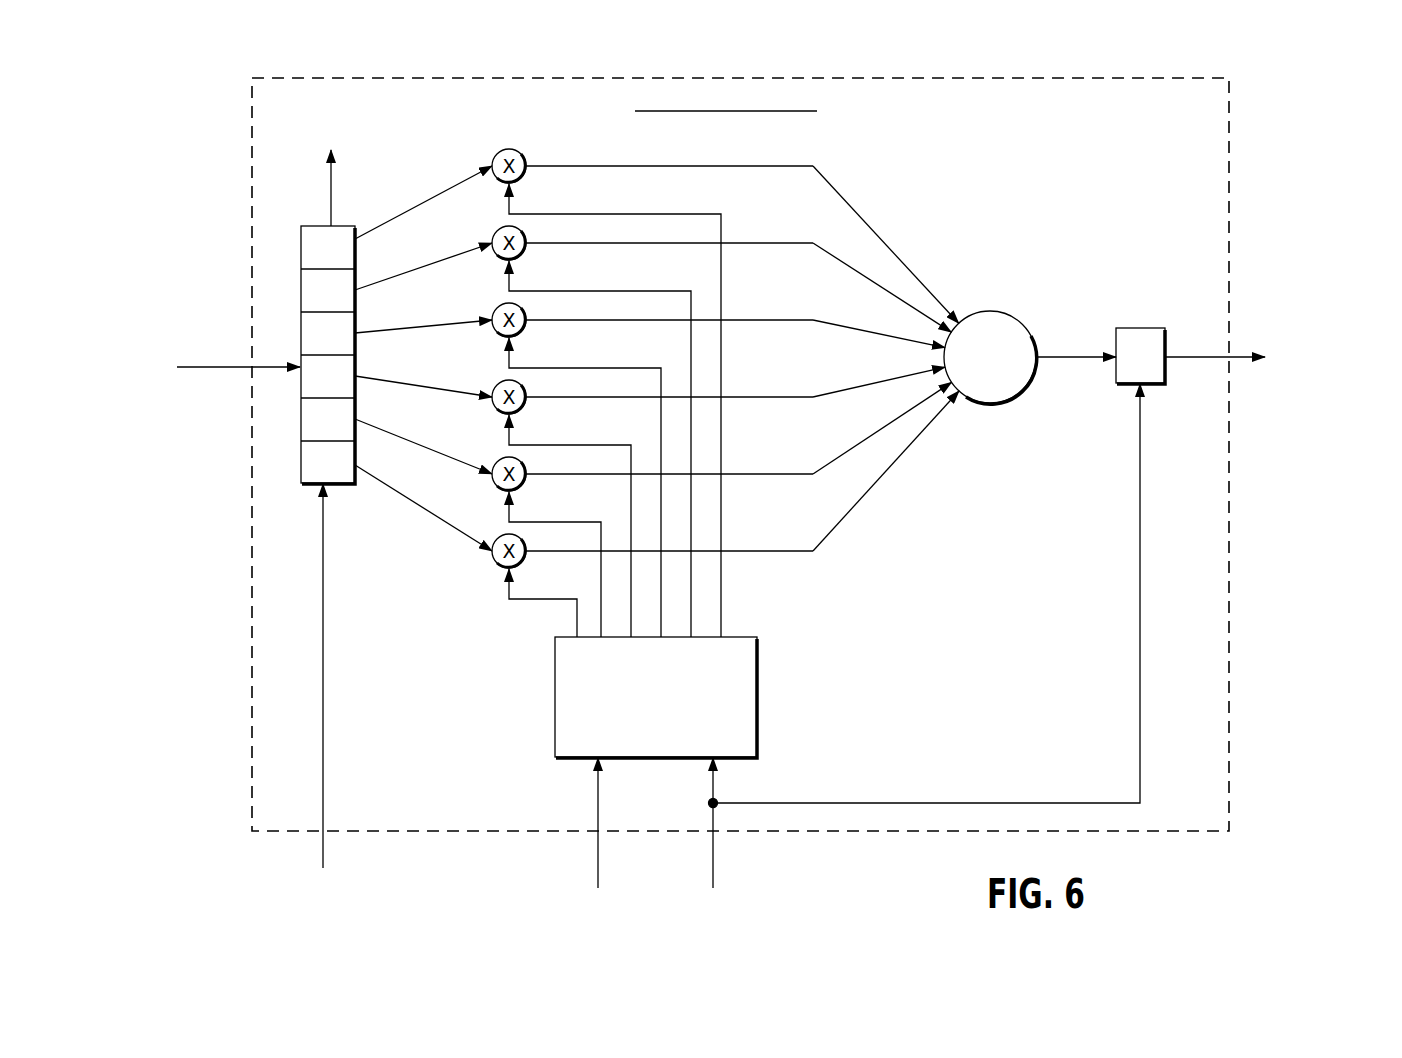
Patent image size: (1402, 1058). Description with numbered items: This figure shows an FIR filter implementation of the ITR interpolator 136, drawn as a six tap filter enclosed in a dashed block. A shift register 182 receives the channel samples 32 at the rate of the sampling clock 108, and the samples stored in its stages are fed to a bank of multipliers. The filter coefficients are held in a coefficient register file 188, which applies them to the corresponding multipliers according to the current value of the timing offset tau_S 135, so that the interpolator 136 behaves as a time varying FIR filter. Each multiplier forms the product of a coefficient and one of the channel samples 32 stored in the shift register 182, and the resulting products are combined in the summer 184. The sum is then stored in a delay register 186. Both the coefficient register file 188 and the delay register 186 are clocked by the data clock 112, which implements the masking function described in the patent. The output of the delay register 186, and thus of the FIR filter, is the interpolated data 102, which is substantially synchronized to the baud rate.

The interpolator 136 is at (238, 175).
The sampling clock 108 is at (221, 370).
The shift register 182 is at (300, 488).
The channel samples 32 is at (323, 848).
The summer 184 is at (1025, 326).
The delay register 186 is at (1113, 373).
The interpolated data 102 is at (1238, 360).
The coefficient register file 188 is at (758, 680).
The tau_S 135 is at (598, 858).
The data clock 112 is at (713, 855).